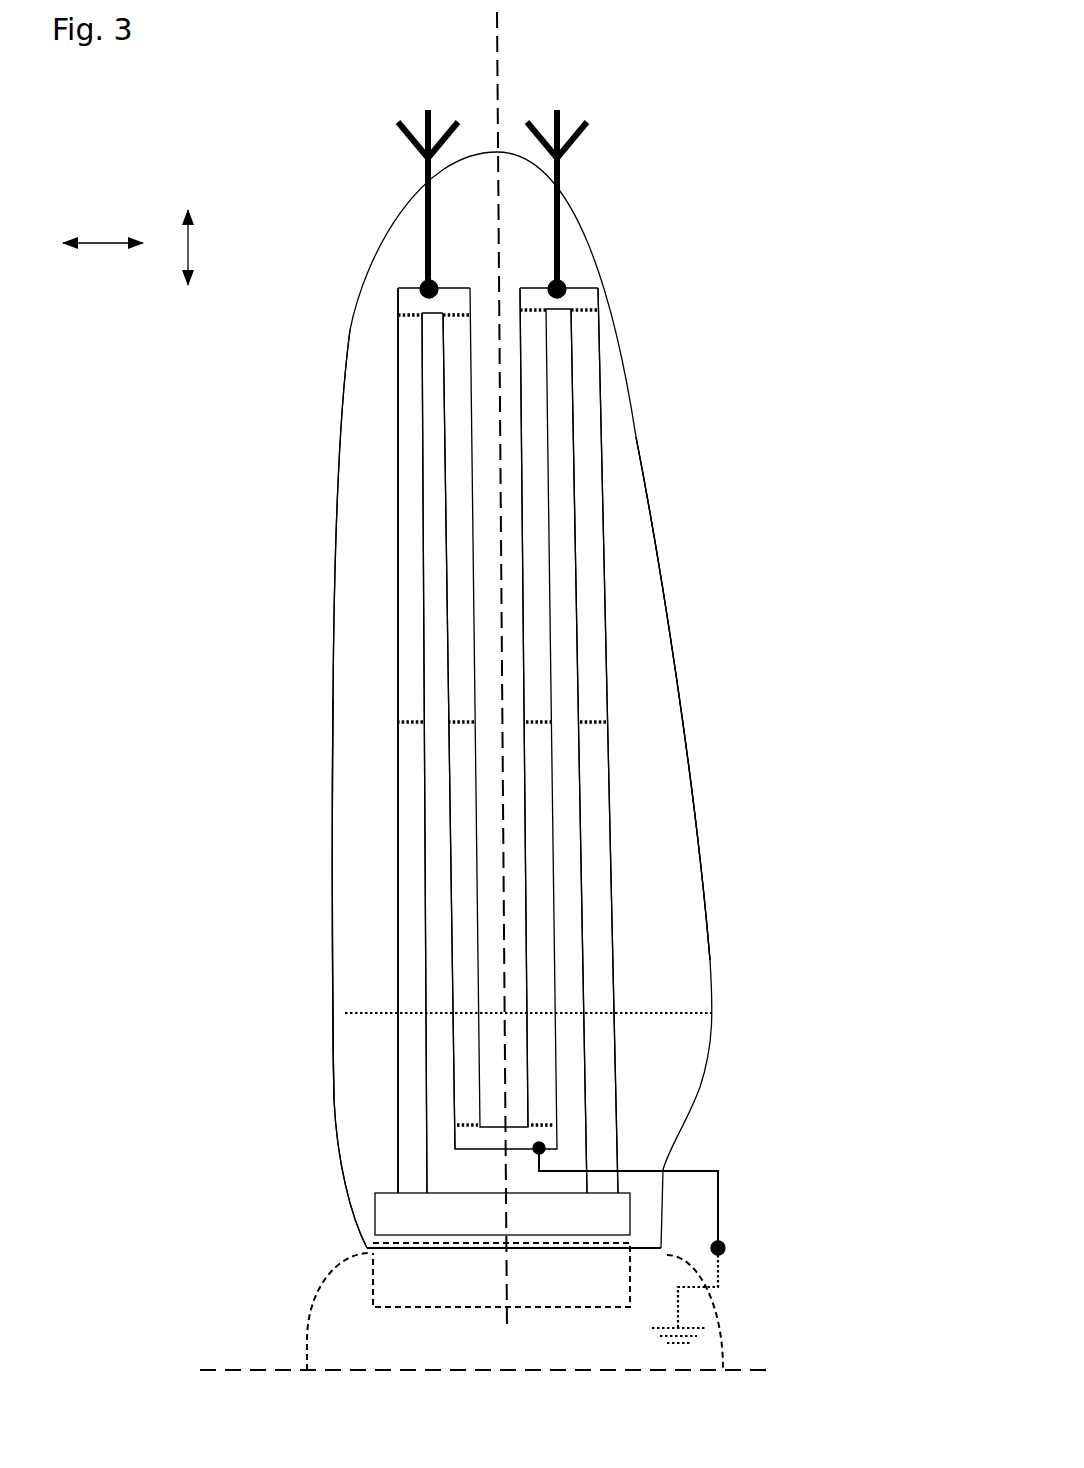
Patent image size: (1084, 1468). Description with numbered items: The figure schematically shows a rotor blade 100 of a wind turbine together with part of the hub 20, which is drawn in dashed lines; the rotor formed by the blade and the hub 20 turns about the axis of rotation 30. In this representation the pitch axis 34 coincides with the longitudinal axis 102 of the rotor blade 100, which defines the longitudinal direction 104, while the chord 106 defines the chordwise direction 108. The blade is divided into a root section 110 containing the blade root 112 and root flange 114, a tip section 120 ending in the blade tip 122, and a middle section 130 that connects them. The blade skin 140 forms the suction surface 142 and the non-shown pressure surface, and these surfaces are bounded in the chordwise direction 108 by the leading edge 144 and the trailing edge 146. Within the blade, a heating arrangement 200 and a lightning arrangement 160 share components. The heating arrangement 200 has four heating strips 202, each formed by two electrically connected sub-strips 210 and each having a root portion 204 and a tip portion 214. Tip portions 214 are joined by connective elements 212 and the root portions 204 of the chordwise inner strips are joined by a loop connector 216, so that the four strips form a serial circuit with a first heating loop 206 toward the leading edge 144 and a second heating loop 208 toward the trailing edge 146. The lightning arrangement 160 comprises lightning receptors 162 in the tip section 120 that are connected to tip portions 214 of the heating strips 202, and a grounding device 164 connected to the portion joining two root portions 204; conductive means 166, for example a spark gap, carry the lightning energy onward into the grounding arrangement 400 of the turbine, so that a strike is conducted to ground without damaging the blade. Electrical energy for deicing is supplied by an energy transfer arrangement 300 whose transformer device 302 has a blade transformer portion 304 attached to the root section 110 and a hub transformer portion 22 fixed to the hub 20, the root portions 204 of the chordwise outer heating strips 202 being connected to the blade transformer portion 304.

The hub 20 is at (308, 1338).
The hub transformer portion 22 is at (478, 1298).
The axis of rotation 30 is at (205, 1370).
The pitch axis 34 is at (497, 21).
The rotor blade 100 is at (826, 294).
The longitudinal axis 102 is at (589, 666).
The longitudinal direction 104 is at (188, 248).
The chord 106 is at (345, 1013).
The chordwise direction 108 is at (103, 243).
The root section 110 is at (725, 1073).
The blade root 112 is at (337, 1175).
The root flange 114 is at (367, 1248).
The tip section 120 is at (666, 266).
The blade tip 122 is at (490, 227).
The middle section 130 is at (703, 637).
The blade skin 140 is at (636, 554).
The suction surface 142 is at (686, 946).
The leading edge 144 is at (333, 607).
The trailing edge 146 is at (666, 586).
The lightning arrangement 160 is at (285, 175).
The lightning receptor 162 is at (398, 122).
The grounding device 164 is at (718, 1202).
The conductive means 166 is at (740, 1248).
The heating arrangement 200 is at (526, 734).
The heating strip 202 is at (375, 726).
The root portion 204 is at (467, 1075).
The first heating loop 206 is at (564, 860).
The second heating loop 208 is at (437, 870).
The sub-strip 210 is at (410, 570).
The connective element 212 is at (412, 300).
The tip portion 214 is at (405, 337).
The loop connector 216 is at (588, 298).
The energy transfer arrangement 300 is at (413, 1237).
The transformer device 302 is at (362, 1242).
The blade transformer portion 304 is at (490, 1227).
The grounding arrangement 400 is at (768, 1301).